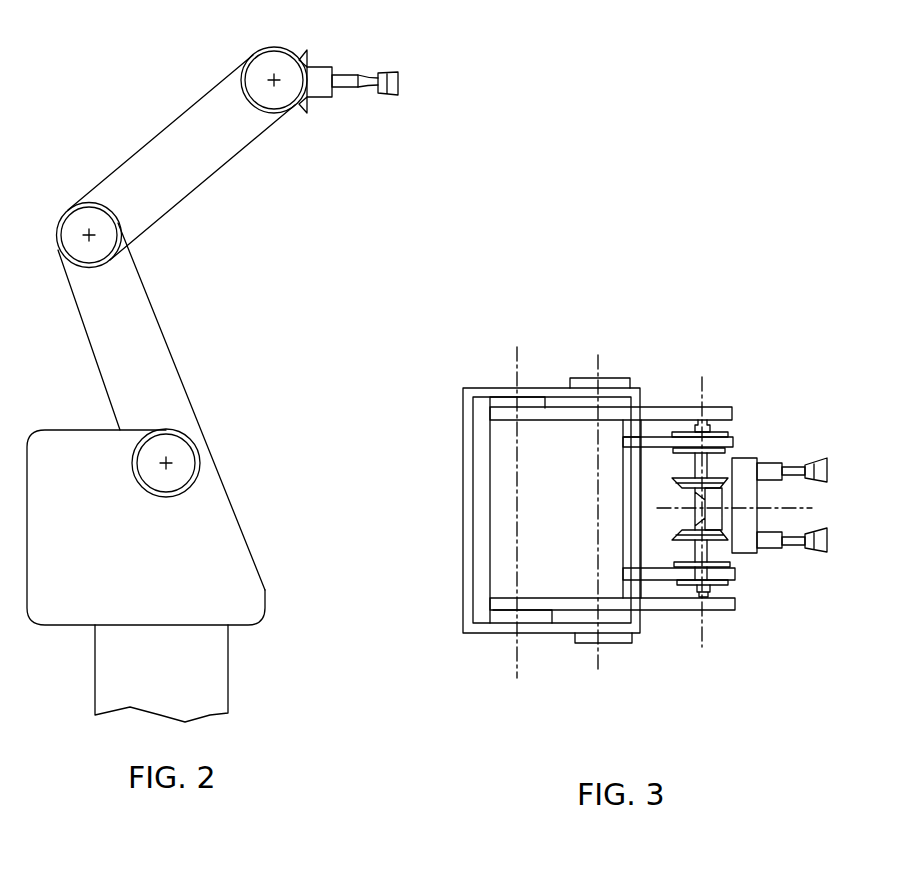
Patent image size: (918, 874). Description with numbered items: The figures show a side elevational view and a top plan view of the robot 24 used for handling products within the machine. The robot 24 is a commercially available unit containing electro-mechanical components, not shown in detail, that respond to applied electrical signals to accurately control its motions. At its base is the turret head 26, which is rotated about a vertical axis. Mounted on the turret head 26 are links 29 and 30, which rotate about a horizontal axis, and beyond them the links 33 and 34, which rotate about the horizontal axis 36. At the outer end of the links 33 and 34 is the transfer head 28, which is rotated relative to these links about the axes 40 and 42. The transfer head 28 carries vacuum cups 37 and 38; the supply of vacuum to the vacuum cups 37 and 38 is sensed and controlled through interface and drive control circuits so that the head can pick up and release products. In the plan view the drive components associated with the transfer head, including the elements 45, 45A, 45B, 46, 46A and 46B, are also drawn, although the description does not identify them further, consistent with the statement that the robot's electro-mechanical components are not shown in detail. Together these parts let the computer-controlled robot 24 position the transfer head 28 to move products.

In FIG. 2, the robot 24 is at (214, 417).
In FIG. 3, the robot 24 is at (708, 674).
In FIG. 2, the turret head 26 is at (240, 585).
In FIG. 3, the turret head 26 is at (468, 634).
In FIG. 2, the transfer head 28 is at (338, 116).
In FIG. 2, the link 29 is at (150, 370).
In FIG. 3, the link 29 is at (560, 608).
In FIG. 2, the link 30 is at (168, 465).
In FIG. 3, the link 30 is at (558, 400).
In FIG. 2, the link 33 is at (212, 160).
In FIG. 3, the link 33 is at (663, 606).
In FIG. 3, the link 34 is at (667, 407).
In FIG. 2, the horizontal axis 36 is at (91, 238).
In FIG. 3, the horizontal axis 36 is at (517, 667).
In FIG. 2, the vacuum cup 37 is at (400, 87).
In FIG. 3, the vacuum cup 37 is at (817, 553).
In FIG. 3, the vacuum cup 38 is at (817, 460).
In FIG. 2, the axis 40 is at (274, 78).
In FIG. 3, the axis 40 is at (705, 628).
In FIG. 3, the axis 42 is at (813, 508).
In FIG. 3, the bevel pulley 45 is at (677, 532).
In FIG. 3, the lower bracket 45A is at (643, 573).
In FIG. 3, the lower pulley 45B is at (720, 586).
In FIG. 3, the bevel pulley 46 is at (681, 487).
In FIG. 3, the upper bracket 46A is at (641, 447).
In FIG. 3, the upper pulley 46B is at (718, 430).